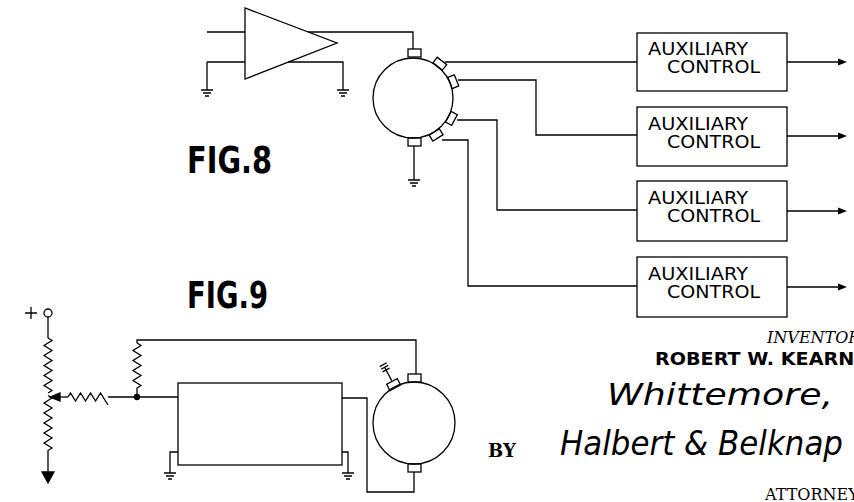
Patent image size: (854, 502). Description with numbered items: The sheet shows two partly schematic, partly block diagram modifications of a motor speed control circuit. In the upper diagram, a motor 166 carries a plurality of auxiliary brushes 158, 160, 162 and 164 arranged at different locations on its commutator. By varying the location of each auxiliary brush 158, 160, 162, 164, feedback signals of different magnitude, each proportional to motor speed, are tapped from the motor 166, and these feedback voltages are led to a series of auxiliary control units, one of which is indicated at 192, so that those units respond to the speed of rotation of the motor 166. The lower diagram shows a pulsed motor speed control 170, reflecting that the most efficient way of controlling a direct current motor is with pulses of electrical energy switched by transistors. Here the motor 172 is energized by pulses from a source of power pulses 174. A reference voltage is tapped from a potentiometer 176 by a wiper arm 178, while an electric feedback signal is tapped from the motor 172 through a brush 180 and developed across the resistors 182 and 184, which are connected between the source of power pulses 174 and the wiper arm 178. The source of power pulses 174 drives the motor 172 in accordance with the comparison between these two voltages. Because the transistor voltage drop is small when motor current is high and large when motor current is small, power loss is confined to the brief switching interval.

In FIG. 8, the auxiliary brush 158 is at (443, 59).
In FIG. 8, the auxiliary brush 160 is at (459, 78).
In FIG. 8, the auxiliary brush 162 is at (461, 116).
In FIG. 8, the auxiliary brush 164 is at (436, 148).
In FIG. 8, the motor 166 is at (376, 112).
In FIG. 8, the auxiliary control 192 is at (789, 5).
In FIG. 9, the motor speed control 170 is at (446, 391).
In FIG. 9, the motor 172 is at (453, 408).
In FIG. 9, the source of power pulses 174 is at (225, 383).
In FIG. 9, the potentiometer 176 is at (53, 343).
In FIG. 9, the wiper arm 178 is at (61, 400).
In FIG. 9, the brush 180 is at (421, 372).
In FIG. 9, the resistor 182 is at (90, 393).
In FIG. 9, the resistor 184 is at (142, 361).